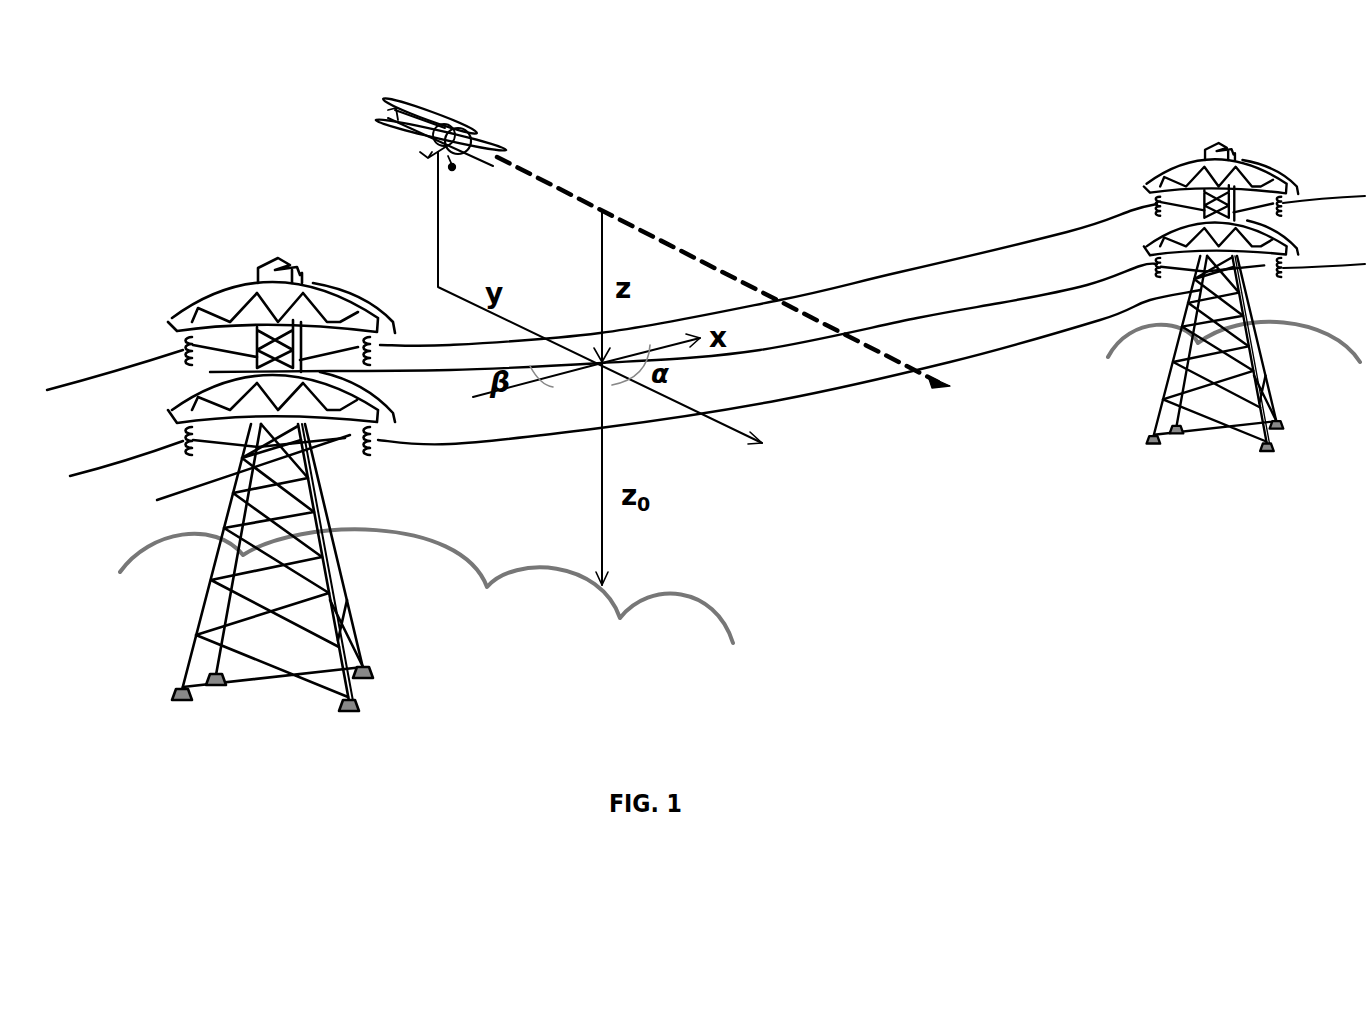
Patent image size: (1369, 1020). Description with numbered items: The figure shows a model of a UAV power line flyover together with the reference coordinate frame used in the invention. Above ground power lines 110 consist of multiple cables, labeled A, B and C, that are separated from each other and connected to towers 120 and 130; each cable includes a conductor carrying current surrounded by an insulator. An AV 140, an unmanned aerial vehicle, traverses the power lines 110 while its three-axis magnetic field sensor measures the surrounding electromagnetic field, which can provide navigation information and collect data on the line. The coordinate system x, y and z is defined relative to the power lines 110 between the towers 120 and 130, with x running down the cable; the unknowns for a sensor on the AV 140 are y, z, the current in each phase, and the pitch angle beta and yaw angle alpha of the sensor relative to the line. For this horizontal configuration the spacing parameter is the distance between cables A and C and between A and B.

The power lines 110 is at (1008, 352).
The tower 120 is at (190, 288).
The tower 130 is at (1153, 183).
The AV (UAV) 140 is at (448, 118).